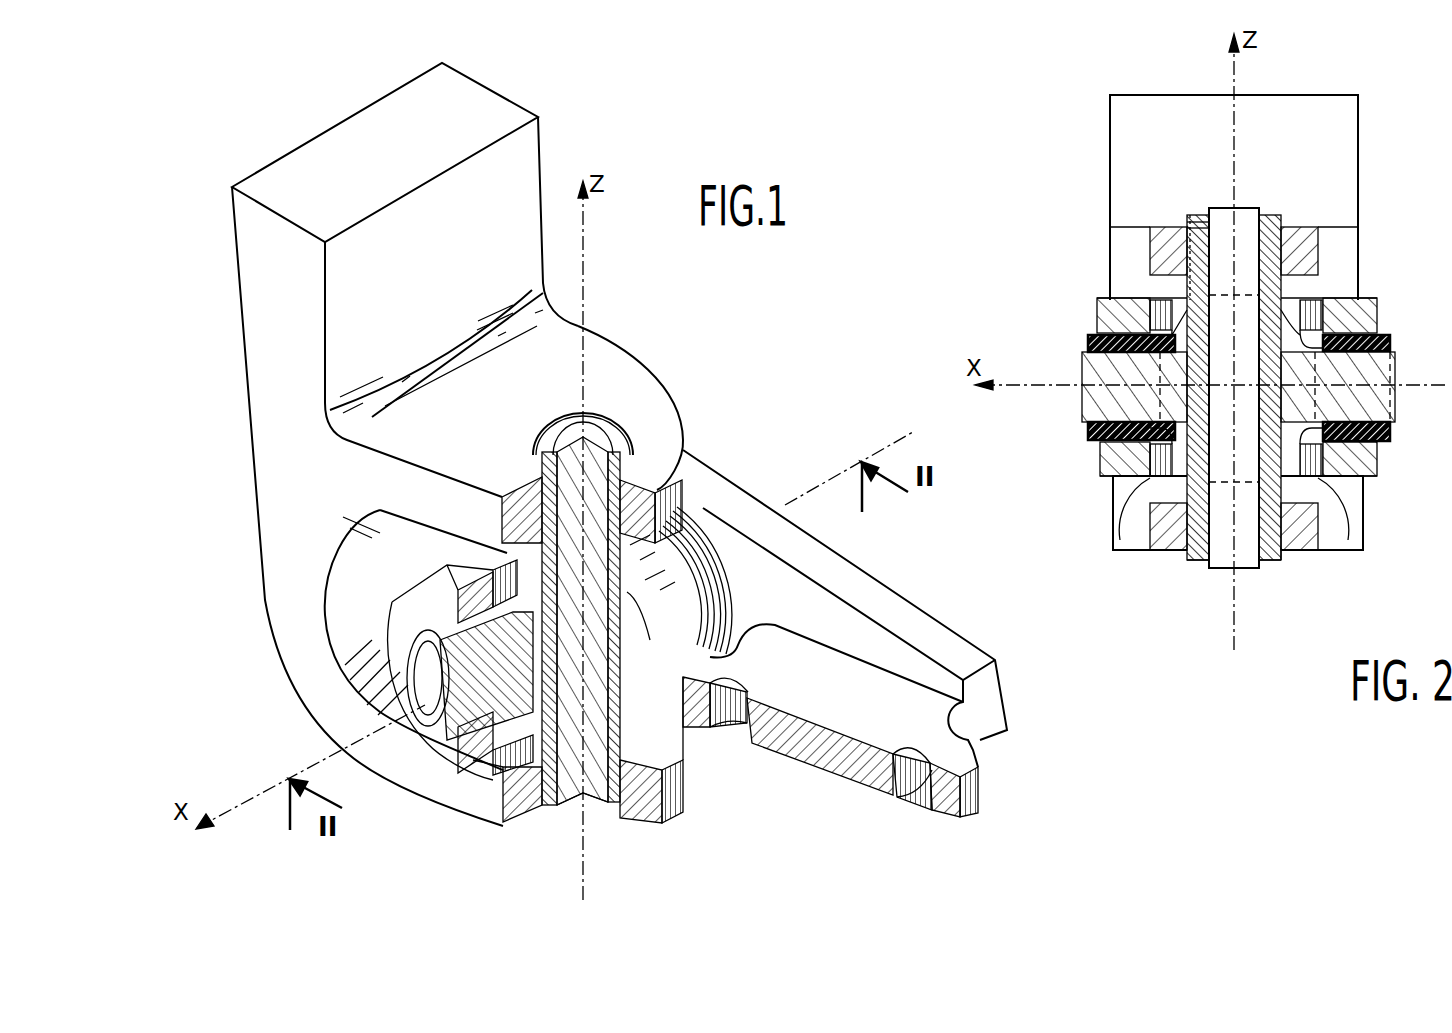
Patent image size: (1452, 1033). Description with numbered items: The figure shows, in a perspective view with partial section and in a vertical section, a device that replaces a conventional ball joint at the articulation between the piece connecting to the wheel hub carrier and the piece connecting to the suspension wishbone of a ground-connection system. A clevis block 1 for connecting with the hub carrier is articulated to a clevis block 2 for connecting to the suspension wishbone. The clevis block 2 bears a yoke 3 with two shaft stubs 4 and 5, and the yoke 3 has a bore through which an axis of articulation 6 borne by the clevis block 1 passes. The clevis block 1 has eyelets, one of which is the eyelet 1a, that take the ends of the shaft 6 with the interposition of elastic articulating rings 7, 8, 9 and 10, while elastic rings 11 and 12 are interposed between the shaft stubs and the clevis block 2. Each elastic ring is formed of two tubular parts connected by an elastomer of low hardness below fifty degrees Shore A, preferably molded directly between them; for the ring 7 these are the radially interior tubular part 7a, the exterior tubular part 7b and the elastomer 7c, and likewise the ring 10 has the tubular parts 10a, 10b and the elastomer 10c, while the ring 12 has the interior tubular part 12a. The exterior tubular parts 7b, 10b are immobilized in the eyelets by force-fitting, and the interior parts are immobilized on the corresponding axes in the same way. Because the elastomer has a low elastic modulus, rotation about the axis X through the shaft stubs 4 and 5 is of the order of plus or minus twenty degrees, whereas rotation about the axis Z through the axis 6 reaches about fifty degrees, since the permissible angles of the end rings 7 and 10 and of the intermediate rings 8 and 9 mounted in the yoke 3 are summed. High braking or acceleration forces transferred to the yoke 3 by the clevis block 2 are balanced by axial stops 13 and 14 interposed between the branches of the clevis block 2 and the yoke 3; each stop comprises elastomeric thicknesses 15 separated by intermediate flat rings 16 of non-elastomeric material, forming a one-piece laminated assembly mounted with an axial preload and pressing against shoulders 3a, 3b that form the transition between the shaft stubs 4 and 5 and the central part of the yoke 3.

In FIG. 1, the clevis block 1 is at (290, 155).
In FIG. 2, the clevis block 1 is at (1366, 165).
In FIG. 1, the eyelet 1a is at (637, 457).
In FIG. 1, the clevis block 2 is at (990, 736).
In FIG. 2, the clevis block 2 is at (1368, 482).
In FIG. 1, the yoke 3 is at (668, 552).
In FIG. 1, the shoulder 3a is at (503, 773).
In FIG. 2, the shoulder 3a is at (1150, 490).
In FIG. 2, the shoulder 3b is at (1330, 500).
In FIG. 1, the shaft stub 4 is at (393, 707).
In FIG. 2, the shaft stub 4 is at (1100, 400).
In FIG. 2, the shaft stub 5 is at (1382, 368).
In FIG. 1, the axis of articulation 6 is at (595, 432).
In FIG. 2, the axis of articulation 6 is at (1242, 217).
In FIG. 1, the elastic articulating ring 7 is at (624, 420).
In FIG. 2, the elastic articulating ring 7 is at (1278, 205).
In FIG. 2, the tubular part 7a is at (1203, 212).
In FIG. 2, the tubular part 7b is at (1185, 223).
In FIG. 2, the elastomer 7c is at (1190, 217).
In FIG. 1, the elastic articulating ring 8 is at (627, 592).
In FIG. 2, the elastic articulating ring 8 is at (1187, 300).
In FIG. 1, the elastic articulating ring 9 is at (690, 758).
In FIG. 2, the elastic articulating ring 9 is at (1150, 520).
In FIG. 1, the elastic articulating ring 10 is at (553, 810).
In FIG. 2, the elastic articulating ring 10 is at (1198, 572).
In FIG. 2, the tubular part 10a is at (1267, 573).
In FIG. 2, the tubular part 10b is at (1287, 560).
In FIG. 2, the elastomer 10c is at (1273, 563).
In FIG. 1, the elastic articulating ring 11 is at (405, 653).
In FIG. 2, the elastic articulating ring 11 is at (1085, 437).
In FIG. 2, the elastic articulating ring 12 is at (1392, 336).
In FIG. 2, the tubular part 12a is at (1398, 437).
In FIG. 1, the axial stop 13 is at (470, 553).
In FIG. 2, the axial stop 13 is at (1185, 297).
In FIG. 1, the axial stop 14 is at (710, 537).
In FIG. 2, the axial stop 14 is at (1320, 297).
In FIG. 1, the elastomeric thickness 15 is at (723, 558).
In FIG. 1, the intermediate flat ring 16 is at (723, 577).